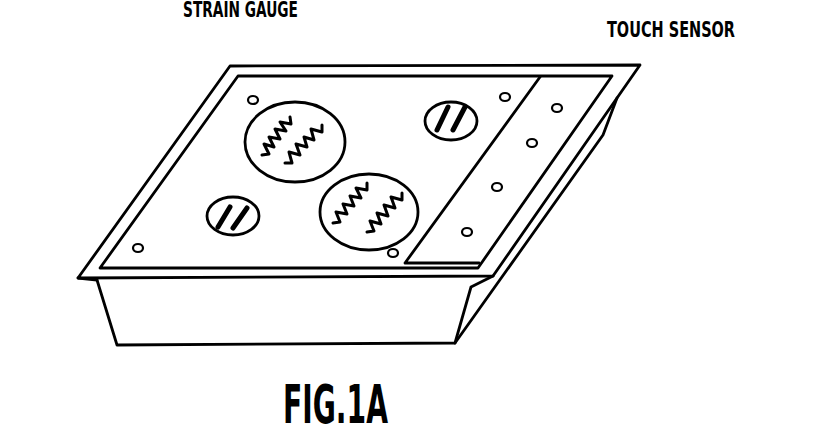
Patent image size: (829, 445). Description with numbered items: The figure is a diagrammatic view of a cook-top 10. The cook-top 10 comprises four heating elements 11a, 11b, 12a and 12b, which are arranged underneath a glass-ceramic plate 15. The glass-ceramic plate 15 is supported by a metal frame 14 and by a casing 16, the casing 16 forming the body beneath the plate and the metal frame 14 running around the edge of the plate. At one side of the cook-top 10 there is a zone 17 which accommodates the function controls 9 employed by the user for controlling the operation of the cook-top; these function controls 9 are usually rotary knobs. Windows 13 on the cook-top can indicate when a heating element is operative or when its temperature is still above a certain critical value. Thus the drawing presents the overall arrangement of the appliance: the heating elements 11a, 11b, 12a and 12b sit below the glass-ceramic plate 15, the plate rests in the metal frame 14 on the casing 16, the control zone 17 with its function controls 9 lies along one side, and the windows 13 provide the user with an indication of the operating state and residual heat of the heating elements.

The function controls 9 is at (557, 103).
The cook-top 10 is at (165, 139).
The heating element 11a is at (213, 205).
The heating element 11b is at (443, 103).
The heating element 12a is at (297, 113).
The heating element 12b is at (407, 210).
The windows 13 is at (253, 95).
The metal frame 14 is at (80, 276).
The glass-ceramic plate 15 is at (486, 93).
The casing 16 is at (108, 329).
The zone 17 is at (578, 102).